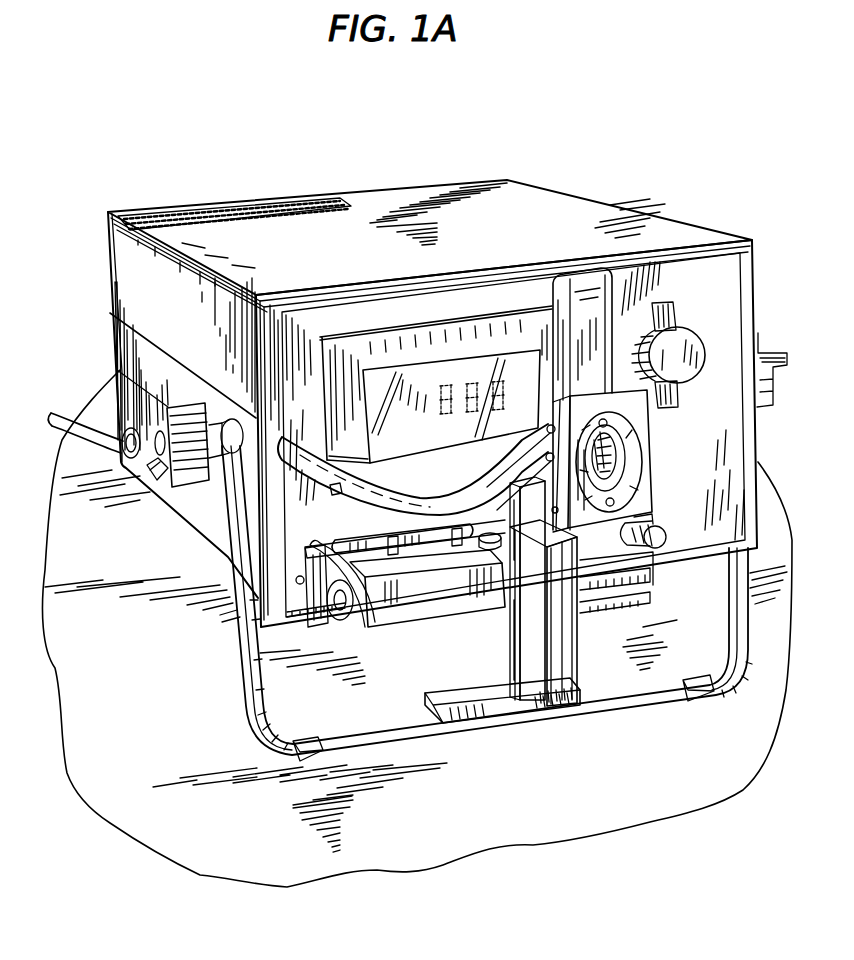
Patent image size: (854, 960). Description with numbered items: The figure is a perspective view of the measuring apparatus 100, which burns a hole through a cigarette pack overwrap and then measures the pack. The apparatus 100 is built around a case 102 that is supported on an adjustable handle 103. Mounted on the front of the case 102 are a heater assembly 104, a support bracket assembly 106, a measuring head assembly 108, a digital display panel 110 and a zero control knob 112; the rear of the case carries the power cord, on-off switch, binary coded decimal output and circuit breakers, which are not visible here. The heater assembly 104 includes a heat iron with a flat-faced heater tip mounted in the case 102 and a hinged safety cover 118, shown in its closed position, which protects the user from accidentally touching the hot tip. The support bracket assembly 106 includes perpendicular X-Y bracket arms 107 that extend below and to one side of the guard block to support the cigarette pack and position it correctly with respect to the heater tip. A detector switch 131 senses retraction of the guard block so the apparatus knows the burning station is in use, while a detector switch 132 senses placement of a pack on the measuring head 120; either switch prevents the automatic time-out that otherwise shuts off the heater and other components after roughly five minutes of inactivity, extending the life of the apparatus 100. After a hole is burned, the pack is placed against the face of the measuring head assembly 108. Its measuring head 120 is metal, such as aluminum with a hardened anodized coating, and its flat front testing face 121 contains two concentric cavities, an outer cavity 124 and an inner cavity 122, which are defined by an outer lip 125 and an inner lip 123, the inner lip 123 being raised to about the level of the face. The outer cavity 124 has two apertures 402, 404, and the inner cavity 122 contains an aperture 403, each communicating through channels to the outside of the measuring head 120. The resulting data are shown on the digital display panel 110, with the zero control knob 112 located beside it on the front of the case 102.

The measuring apparatus 100 is at (683, 739).
The case 102 is at (116, 266).
The adjustable handle 103 is at (249, 708).
The heater assembly 104 is at (304, 554).
The support bracket assembly 106 is at (547, 637).
The X-Y bracket arms 107 is at (548, 668).
The measuring head assembly 108 is at (584, 282).
The digital display panel 110 is at (430, 400).
The zero control knob 112 is at (684, 340).
The hinged safety cover 118 is at (405, 608).
The measuring head 120 is at (640, 580).
The front testing face 121 is at (657, 513).
The inner cavity 122 is at (620, 478).
The inner lip 123 is at (640, 444).
The outer cavity 124 is at (636, 550).
The outer lip 125 is at (622, 460).
The detector switch 131 is at (407, 537).
The detector switch 132 is at (703, 672).
The aperture 402 is at (577, 545).
The aperture 403 is at (593, 408).
The aperture 404 is at (608, 424).